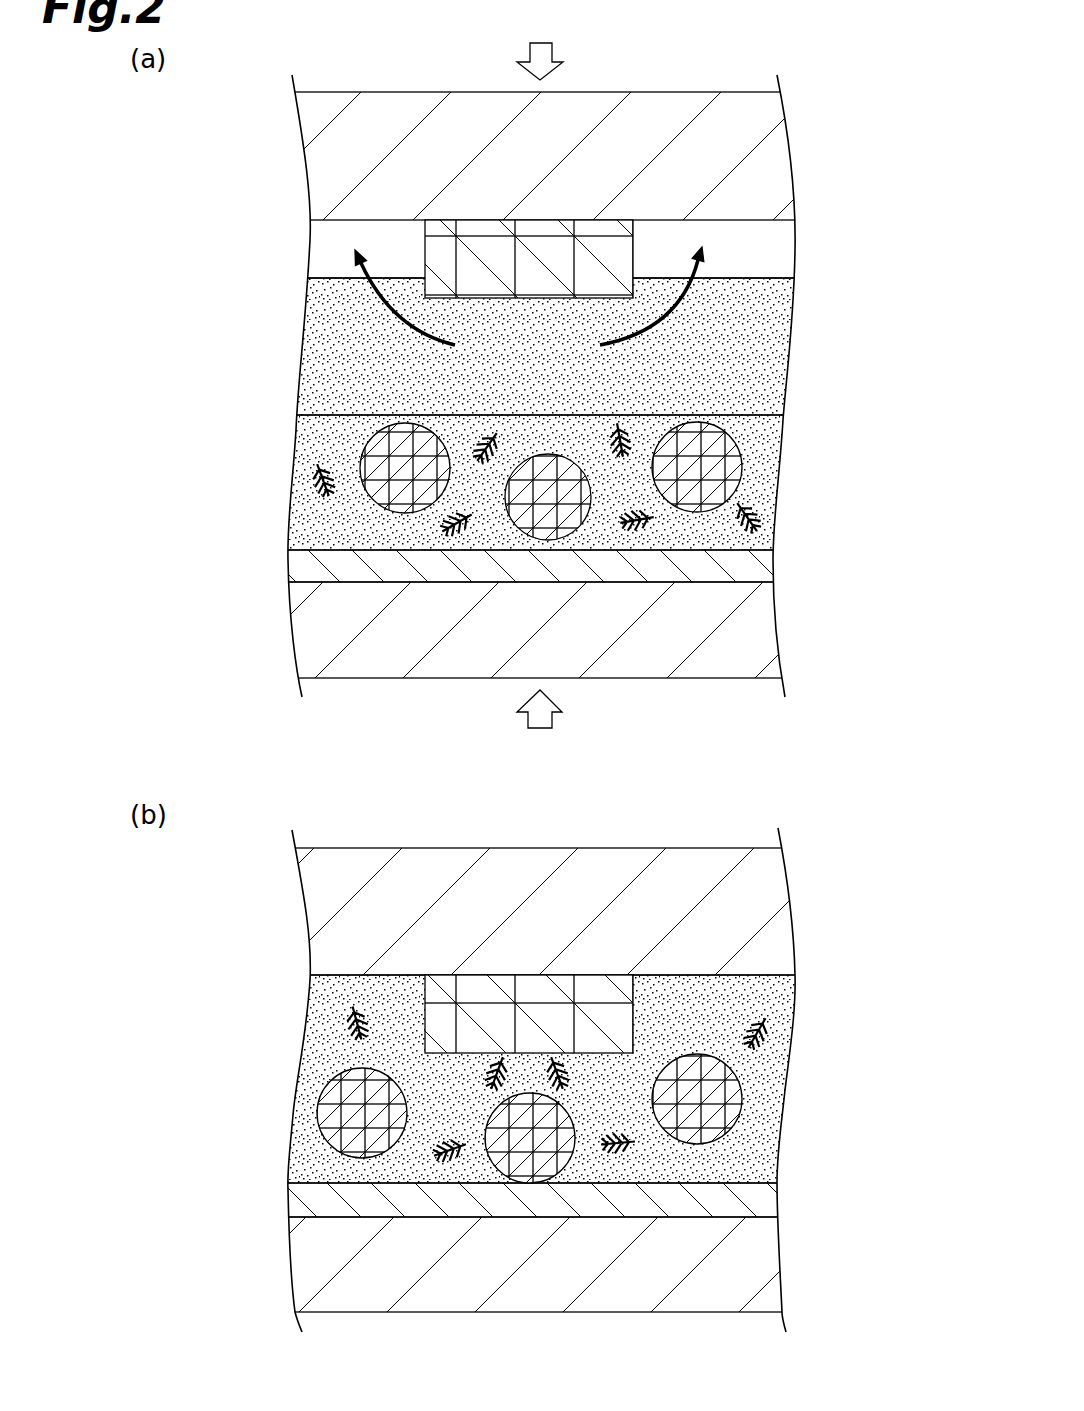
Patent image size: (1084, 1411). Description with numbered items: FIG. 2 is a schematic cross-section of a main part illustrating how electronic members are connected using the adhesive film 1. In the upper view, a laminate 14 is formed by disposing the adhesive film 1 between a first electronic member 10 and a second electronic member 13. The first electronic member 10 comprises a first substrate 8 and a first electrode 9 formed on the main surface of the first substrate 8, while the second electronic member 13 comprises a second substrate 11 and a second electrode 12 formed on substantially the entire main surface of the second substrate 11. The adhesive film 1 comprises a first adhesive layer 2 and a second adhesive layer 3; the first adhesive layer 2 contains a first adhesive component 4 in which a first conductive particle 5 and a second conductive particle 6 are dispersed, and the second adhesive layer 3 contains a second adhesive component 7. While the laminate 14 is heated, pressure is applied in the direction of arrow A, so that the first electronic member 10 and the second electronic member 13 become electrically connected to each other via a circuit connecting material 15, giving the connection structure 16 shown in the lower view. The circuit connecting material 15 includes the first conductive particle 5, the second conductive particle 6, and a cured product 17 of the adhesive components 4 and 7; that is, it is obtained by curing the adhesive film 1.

The adhesive film 1 is at (611, 414).
The first adhesive layer 2 is at (593, 482).
The second adhesive layer 3 is at (597, 346).
The first adhesive component 4 is at (757, 482).
The first conductive particle 5 is at (322, 478).
The second conductive particle 6 is at (368, 444).
The second adhesive component 7 is at (757, 358).
The first substrate 8 is at (772, 155).
The first electrode 9 is at (613, 243).
The first electronic member 10 is at (603, 572).
The second substrate 11 is at (752, 628).
The second electrode 12 is at (752, 568).
The second electronic member 13 is at (603, 931).
The laminate 14 is at (871, 104).
The circuit connecting material 15 is at (603, 1079).
The connection structure 16 is at (871, 860).
The cured product 17 is at (755, 1090).